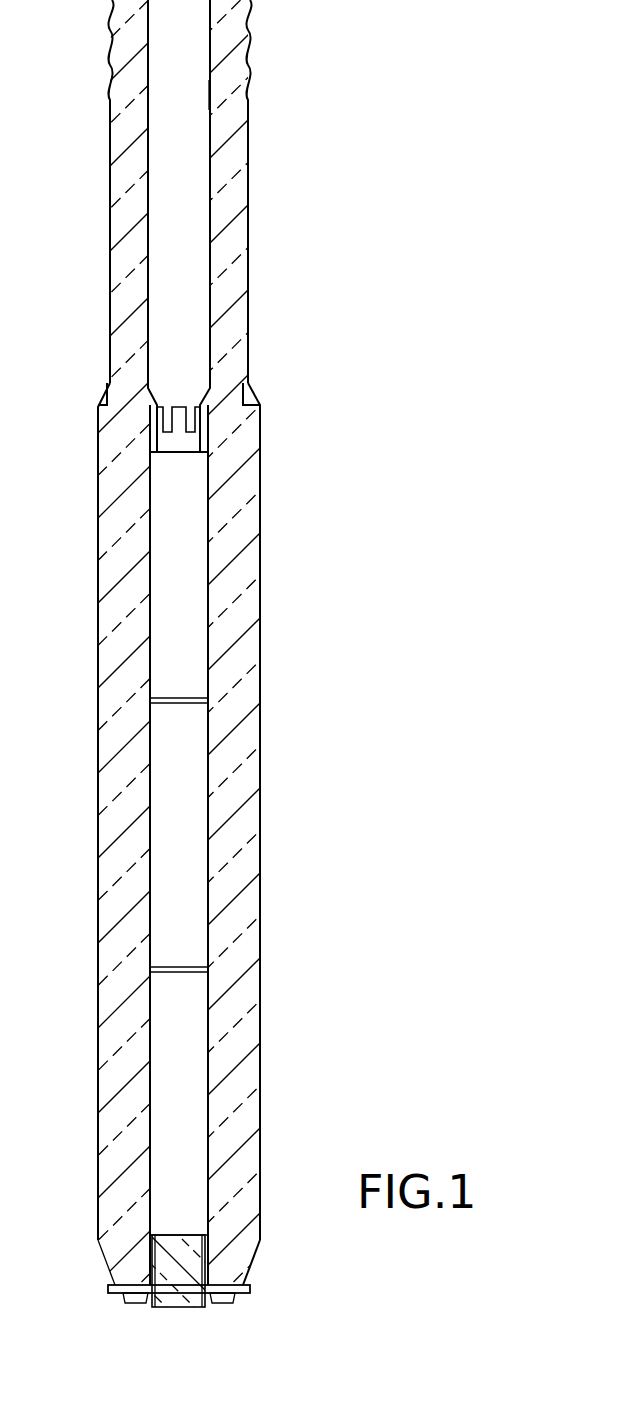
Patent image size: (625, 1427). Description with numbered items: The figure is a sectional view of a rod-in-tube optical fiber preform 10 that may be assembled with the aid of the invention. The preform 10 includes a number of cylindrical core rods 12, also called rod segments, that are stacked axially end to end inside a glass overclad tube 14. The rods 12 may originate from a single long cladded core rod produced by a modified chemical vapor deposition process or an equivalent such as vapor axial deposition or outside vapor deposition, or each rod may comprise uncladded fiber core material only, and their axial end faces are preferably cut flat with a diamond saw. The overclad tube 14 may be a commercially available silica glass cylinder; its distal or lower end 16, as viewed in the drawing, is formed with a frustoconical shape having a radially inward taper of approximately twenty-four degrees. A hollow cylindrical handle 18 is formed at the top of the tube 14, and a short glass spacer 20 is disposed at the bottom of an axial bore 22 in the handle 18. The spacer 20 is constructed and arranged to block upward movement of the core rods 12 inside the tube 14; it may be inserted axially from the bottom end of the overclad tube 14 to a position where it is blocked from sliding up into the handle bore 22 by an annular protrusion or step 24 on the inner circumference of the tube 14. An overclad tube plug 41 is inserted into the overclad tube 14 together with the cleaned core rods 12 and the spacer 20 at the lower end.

The rod-in-tube optical fiber preform 10 is at (286, 433).
The core rods 12 is at (170, 540).
The overclad tube 14 is at (260, 624).
The lower end 16 is at (240, 1268).
The handle 18 is at (238, 250).
The spacer 20 is at (182, 407).
The axial bore 22 is at (212, 84).
The annular protrusion or step 24 is at (207, 400).
The overclad tube plug 41 is at (177, 1277).